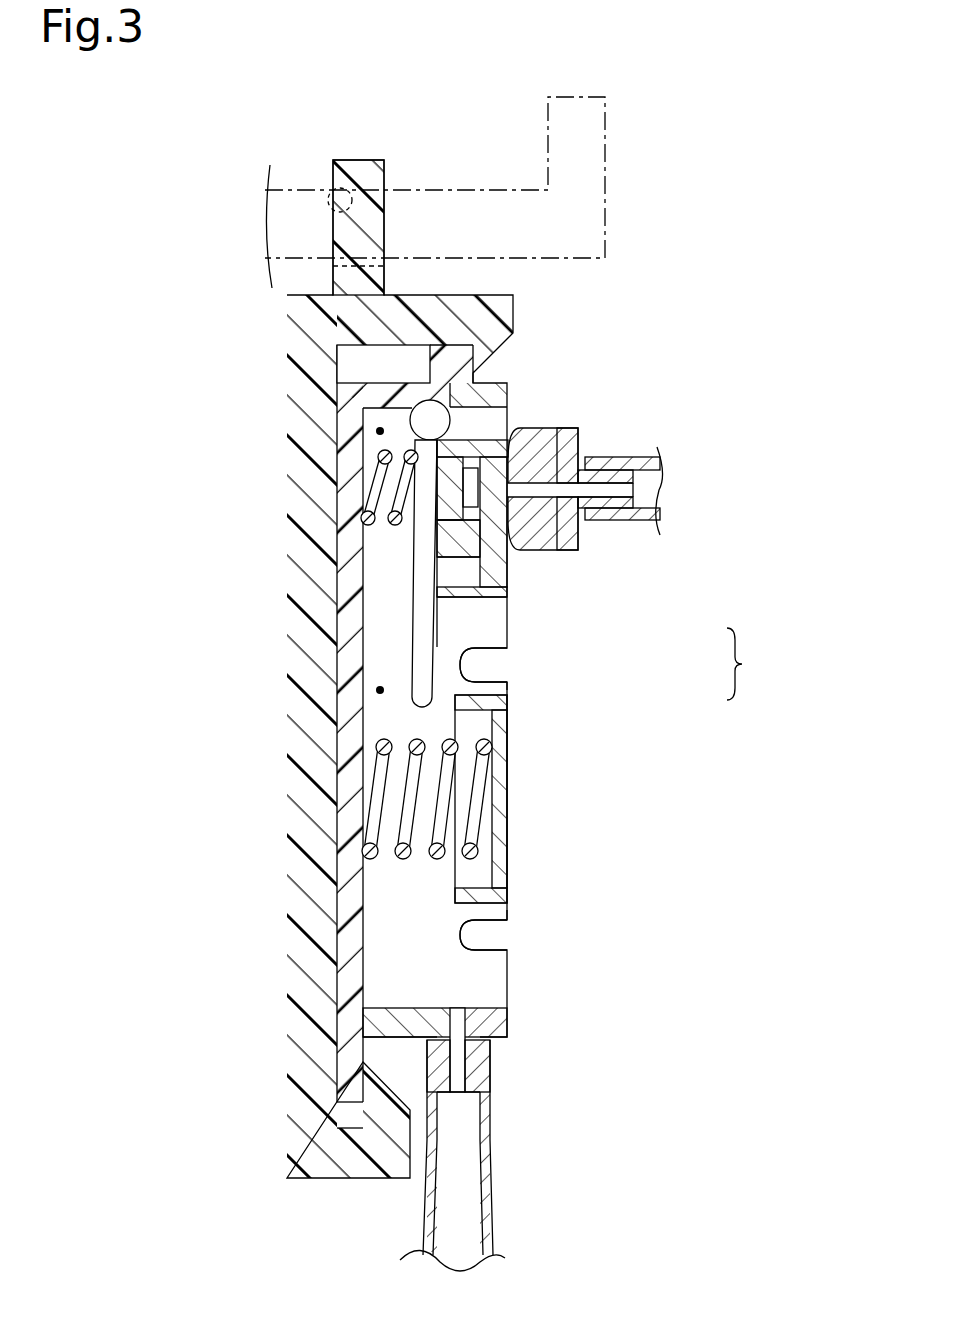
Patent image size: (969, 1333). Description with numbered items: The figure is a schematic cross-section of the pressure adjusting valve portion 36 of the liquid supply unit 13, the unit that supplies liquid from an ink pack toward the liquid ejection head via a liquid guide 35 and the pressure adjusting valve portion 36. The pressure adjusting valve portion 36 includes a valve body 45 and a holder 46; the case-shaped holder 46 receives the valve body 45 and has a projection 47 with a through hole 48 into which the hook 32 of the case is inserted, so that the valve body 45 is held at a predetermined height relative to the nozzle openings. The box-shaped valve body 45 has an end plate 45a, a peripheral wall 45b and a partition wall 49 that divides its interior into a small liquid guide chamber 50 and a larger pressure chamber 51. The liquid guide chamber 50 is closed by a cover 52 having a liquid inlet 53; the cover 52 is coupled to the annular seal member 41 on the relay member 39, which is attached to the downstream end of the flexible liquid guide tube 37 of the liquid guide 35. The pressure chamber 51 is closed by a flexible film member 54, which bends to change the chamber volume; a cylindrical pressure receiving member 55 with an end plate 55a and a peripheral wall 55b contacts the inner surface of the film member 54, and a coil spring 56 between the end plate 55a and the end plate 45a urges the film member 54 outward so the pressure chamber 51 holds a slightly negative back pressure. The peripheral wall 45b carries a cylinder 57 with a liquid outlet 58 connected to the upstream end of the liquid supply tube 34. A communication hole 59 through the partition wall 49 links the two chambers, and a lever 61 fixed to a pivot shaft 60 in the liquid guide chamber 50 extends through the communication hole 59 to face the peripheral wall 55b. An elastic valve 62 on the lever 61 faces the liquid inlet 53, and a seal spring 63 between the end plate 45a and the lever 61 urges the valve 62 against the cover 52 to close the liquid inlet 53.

The liquid supply unit 13 is at (757, 664).
The hook 32 is at (548, 140).
The liquid supply tube 34 is at (490, 1183).
The liquid guide 35 is at (655, 632).
The pressure adjusting valve portion 36 is at (657, 695).
The liquid guide tube 37 is at (648, 457).
The relay member 39 is at (578, 433).
The annular seal member 41 is at (540, 428).
The valve body 45 is at (502, 1007).
The end plate 45a is at (363, 978).
The peripheral wall 45b is at (508, 1020).
The holder 46 is at (290, 822).
The projection 47 is at (360, 160).
The through hole 48 is at (340, 210).
The partition wall 49 is at (495, 597).
The liquid guide chamber 50 is at (380, 431).
The pressure chamber 51 is at (380, 690).
The cover 52 is at (503, 413).
The liquid inlet 53 is at (578, 540).
The film member 54 is at (507, 925).
The pressure receiving member 55 is at (547, 798).
The end plate 55a is at (507, 762).
The peripheral wall 55b is at (495, 712).
The coil spring 56 is at (405, 858).
The cylinder 57 is at (490, 1065).
The liquid outlet 58 is at (450, 1008).
The communication hole 59 is at (450, 577).
The pivot shaft 60 is at (425, 415).
The lever 61 is at (418, 640).
The valve 62 is at (478, 512).
The seal spring 63 is at (395, 507).